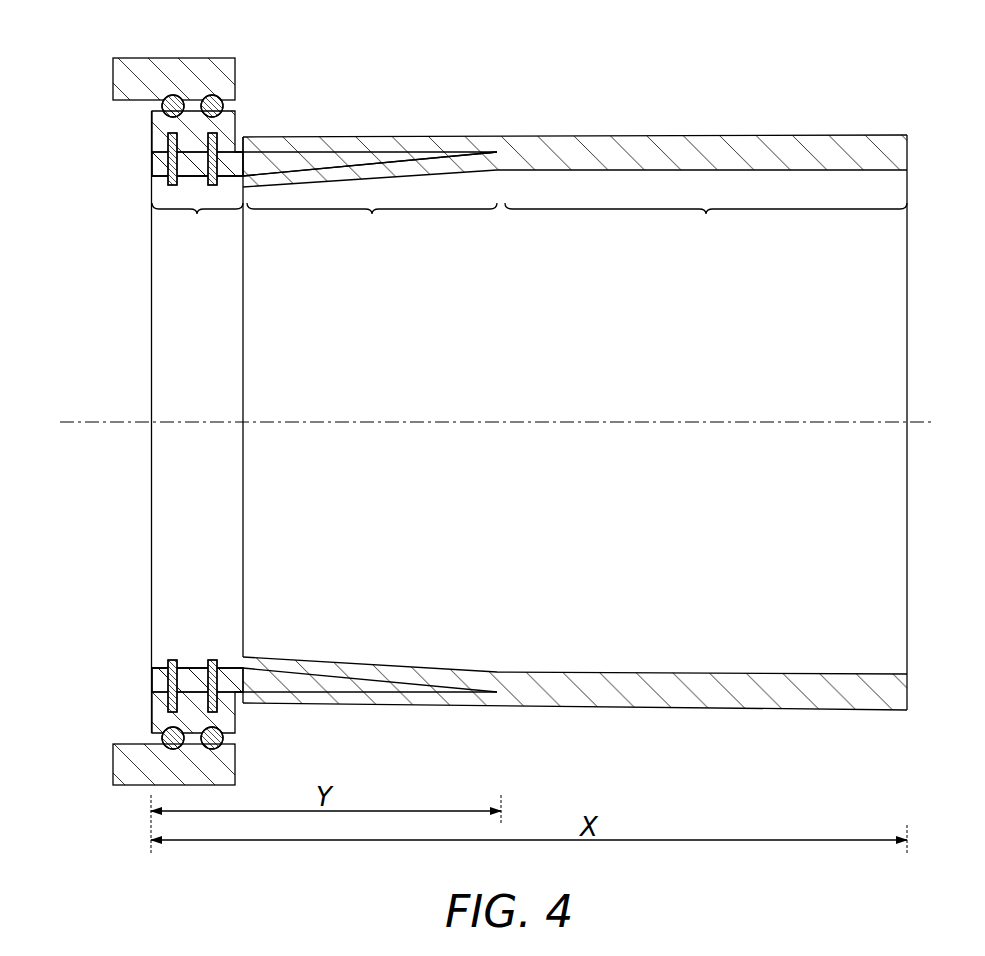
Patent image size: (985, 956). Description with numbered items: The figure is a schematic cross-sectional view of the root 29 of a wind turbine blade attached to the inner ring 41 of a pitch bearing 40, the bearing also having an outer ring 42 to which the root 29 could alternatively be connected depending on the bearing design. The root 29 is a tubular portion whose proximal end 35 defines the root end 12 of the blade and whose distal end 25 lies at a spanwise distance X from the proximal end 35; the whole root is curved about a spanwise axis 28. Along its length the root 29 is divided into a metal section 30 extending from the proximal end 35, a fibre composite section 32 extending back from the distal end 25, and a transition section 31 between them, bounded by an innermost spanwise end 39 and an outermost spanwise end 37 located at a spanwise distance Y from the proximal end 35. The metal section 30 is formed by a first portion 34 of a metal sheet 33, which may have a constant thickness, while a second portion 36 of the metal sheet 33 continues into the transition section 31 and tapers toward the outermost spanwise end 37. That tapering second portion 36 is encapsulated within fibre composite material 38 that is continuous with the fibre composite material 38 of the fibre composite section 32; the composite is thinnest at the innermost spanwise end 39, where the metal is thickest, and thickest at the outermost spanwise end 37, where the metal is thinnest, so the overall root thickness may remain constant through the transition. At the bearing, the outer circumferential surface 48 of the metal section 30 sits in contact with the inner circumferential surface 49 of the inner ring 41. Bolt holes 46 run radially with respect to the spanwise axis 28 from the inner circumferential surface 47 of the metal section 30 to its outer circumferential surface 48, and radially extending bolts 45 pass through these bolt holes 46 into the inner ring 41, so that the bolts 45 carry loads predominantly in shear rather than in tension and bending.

The root end 12 is at (152, 165).
The distal end 25 is at (908, 150).
The spanwise axis 28 is at (88, 424).
The root 29 is at (764, 152).
The metal section 30 is at (197, 225).
The transition section 31 is at (372, 225).
The fibre composite section 32 is at (706, 225).
The metal sheet 33 is at (318, 157).
The first portion 34 is at (152, 157).
The proximal end 35 is at (152, 174).
The second portion 36 is at (395, 157).
The outermost spanwise end 37 is at (497, 150).
The fibre composite material 38 is at (630, 152).
The innermost spanwise end 39 is at (247, 140).
The pitch bearing 40 is at (141, 62).
The inner ring 41 is at (153, 126).
The outer ring 42 is at (172, 64).
The bolts 45 is at (168, 662).
The bolt holes 46 is at (168, 688).
The inner circumferential surface 47 is at (199, 668).
The outer circumferential surface 48 is at (192, 690).
The inner circumferential surface 49 is at (178, 705).